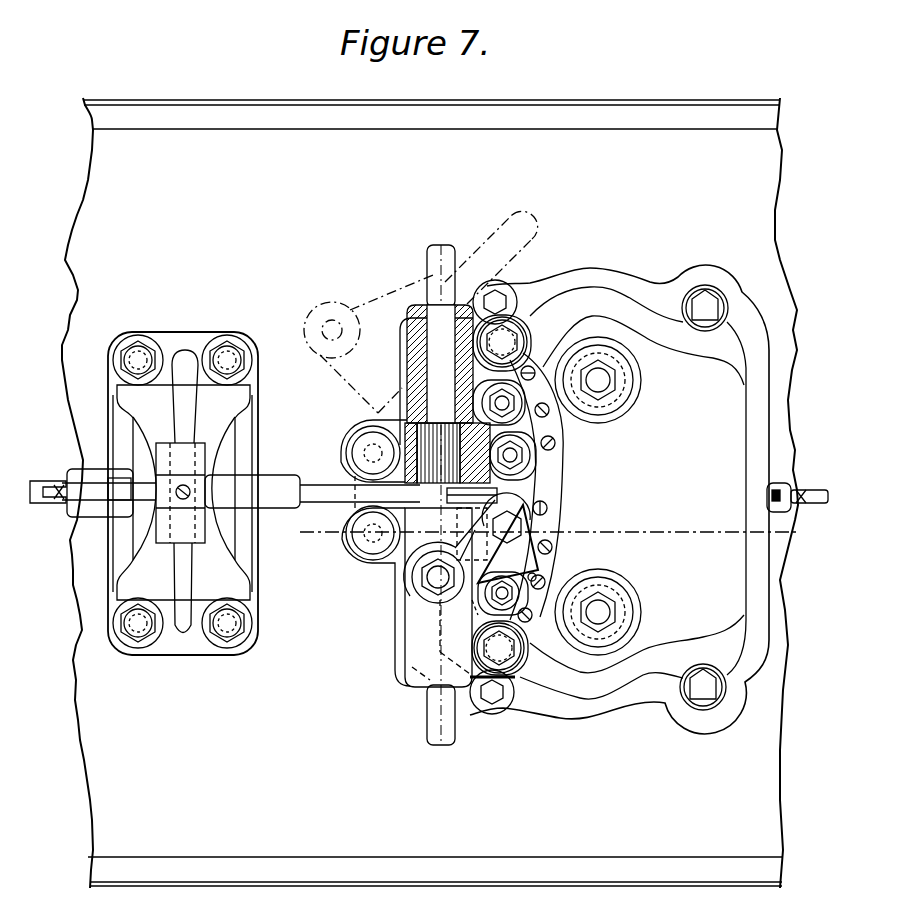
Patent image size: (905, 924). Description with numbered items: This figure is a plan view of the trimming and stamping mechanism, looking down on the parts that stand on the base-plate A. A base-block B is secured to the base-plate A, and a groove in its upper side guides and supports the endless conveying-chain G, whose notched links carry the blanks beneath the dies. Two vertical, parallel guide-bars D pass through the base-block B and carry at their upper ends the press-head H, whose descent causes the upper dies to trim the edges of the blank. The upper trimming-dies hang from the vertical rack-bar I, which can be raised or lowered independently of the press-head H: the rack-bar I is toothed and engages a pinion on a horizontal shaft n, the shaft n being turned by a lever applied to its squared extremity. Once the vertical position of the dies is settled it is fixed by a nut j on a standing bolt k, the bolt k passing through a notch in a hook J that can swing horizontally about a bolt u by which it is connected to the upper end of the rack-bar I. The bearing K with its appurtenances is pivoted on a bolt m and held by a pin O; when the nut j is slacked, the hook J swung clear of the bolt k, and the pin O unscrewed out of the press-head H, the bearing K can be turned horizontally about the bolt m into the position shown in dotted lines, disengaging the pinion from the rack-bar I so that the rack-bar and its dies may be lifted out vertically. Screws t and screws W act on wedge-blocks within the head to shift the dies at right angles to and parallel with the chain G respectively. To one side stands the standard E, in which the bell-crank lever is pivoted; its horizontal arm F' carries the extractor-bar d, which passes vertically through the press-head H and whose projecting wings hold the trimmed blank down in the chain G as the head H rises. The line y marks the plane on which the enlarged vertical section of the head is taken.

The base-plate A is at (430, 493).
The base-block B is at (612, 275).
The guide-bars D is at (650, 614).
The standard E is at (183, 493).
The rod F' is at (241, 493).
The endless conveying-chain G is at (429, 494).
The press-head H is at (637, 494).
The rack-bar I is at (447, 394).
The hook J is at (475, 531).
The bearing K is at (421, 449).
The slot L is at (472, 534).
The screws W is at (552, 462).
The extractor-bar d is at (447, 489).
The upper nut j is at (418, 585).
The standing bolt k is at (465, 619).
The bolt m is at (500, 496).
The horizontal shaft n is at (441, 509).
The pin O is at (373, 493).
The screws t is at (548, 440).
The bolt u is at (508, 538).
The section line y is at (552, 495).